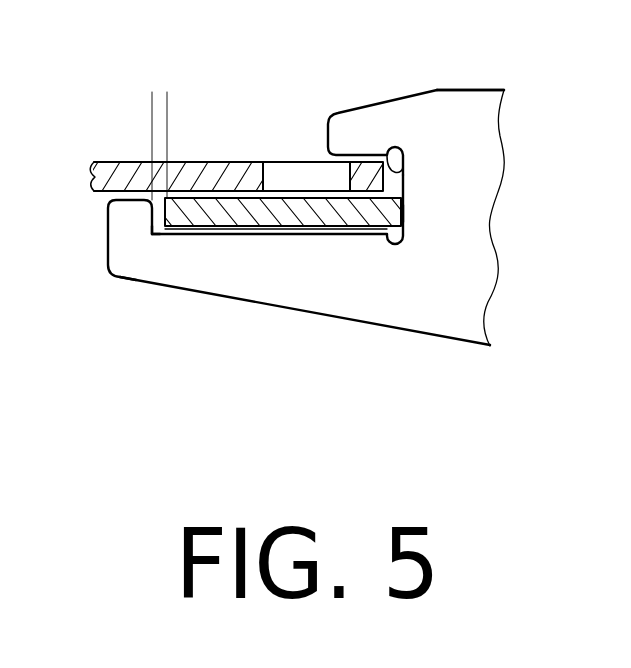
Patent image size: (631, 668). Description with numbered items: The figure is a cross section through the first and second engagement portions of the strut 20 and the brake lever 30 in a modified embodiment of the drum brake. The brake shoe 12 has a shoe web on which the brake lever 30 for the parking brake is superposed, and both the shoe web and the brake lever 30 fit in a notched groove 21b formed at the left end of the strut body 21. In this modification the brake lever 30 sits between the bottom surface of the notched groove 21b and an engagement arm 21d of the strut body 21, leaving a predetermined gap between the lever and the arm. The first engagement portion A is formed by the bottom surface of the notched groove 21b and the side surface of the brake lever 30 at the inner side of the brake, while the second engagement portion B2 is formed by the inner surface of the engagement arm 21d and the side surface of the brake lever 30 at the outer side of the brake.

The brake shoe 12 is at (113, 162).
The strut 20 is at (481, 89).
The strut body 21 is at (289, 201).
The notched groove 21b is at (390, 150).
The engagement arm 21d is at (117, 218).
The brake lever 30 is at (295, 229).
The first engagement portion A is at (405, 213).
The second engagement portion B2 is at (155, 237).